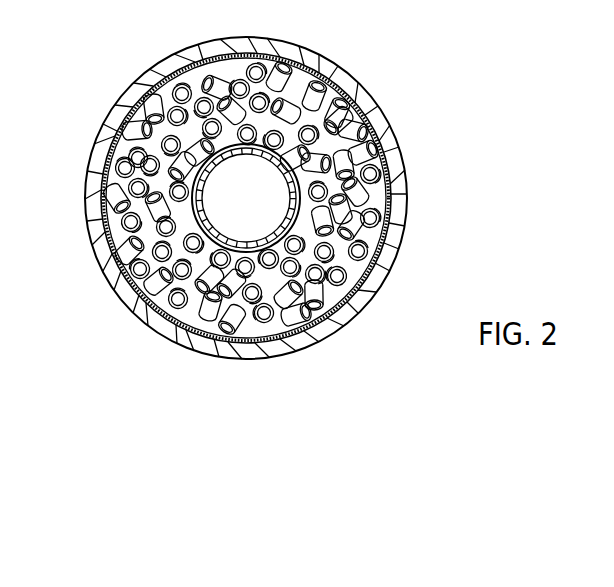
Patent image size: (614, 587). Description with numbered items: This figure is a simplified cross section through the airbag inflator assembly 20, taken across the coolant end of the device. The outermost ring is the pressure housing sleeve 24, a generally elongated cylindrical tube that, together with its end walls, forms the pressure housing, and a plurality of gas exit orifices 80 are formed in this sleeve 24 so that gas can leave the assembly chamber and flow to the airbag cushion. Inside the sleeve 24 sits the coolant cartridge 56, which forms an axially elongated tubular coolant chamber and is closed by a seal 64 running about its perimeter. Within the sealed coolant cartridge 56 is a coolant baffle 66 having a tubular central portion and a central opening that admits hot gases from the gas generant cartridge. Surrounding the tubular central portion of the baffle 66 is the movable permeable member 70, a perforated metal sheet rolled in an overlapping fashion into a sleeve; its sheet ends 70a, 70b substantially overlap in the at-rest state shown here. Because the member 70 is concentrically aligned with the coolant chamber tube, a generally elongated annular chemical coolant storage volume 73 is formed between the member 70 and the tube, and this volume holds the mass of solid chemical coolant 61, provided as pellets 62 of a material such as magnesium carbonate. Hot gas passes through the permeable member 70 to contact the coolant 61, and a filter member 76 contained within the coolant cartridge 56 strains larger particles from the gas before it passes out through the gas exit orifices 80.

The airbag inflator assembly 20 is at (437, 136).
The pressure housing sleeve 24 is at (101, 271).
The coolant cartridge 56 is at (127, 152).
The solid chemical coolant 61 is at (575, 8).
The pellets 62 is at (180, 66).
The seal 64 is at (366, 305).
The coolant baffle 66 is at (388, 232).
The permeable member 70 is at (337, 122).
The sheet end 70a is at (383, 258).
The sheet end 70b is at (286, 355).
The chemical coolant storage volume 73 is at (317, 83).
The filter member 76 is at (333, 340).
The gas exit orifices 80 is at (244, 43).